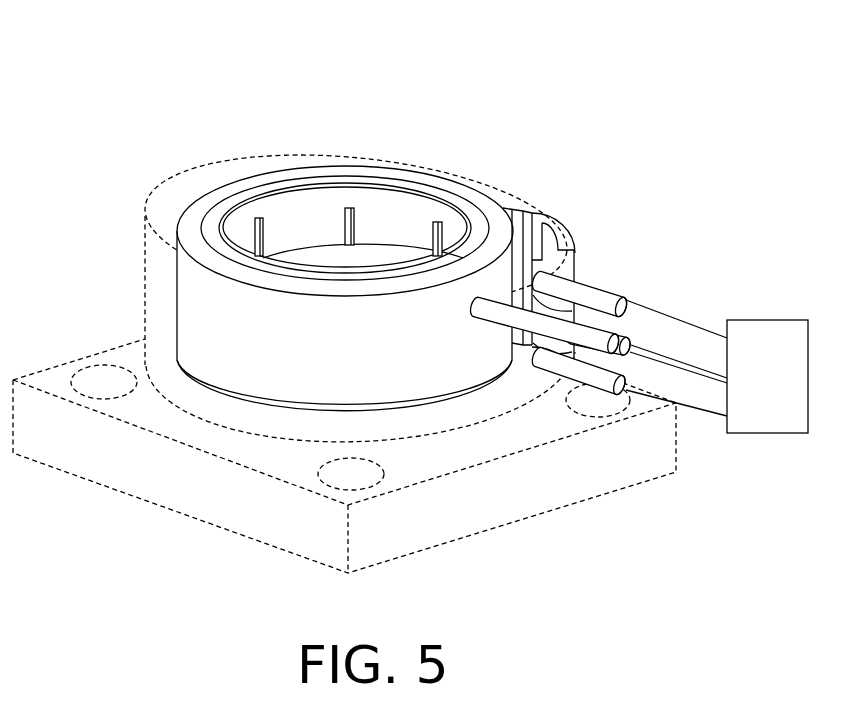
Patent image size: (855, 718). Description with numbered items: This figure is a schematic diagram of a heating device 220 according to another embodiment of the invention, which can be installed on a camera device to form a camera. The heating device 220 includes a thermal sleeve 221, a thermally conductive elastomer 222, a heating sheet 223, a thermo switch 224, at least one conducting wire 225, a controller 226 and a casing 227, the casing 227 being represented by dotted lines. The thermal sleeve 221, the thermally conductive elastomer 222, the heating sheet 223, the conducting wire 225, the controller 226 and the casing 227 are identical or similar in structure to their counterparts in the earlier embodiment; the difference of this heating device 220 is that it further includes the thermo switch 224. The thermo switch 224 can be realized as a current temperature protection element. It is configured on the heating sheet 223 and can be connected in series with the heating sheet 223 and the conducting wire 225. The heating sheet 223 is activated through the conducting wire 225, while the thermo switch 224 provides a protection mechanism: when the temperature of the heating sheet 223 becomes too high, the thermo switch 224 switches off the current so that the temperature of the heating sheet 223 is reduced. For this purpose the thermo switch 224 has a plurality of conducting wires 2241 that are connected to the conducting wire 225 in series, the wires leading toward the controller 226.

The heating device 220 is at (231, 97).
The thermal sleeve 221 is at (430, 183).
The thermally conductive elastomer 222 is at (337, 182).
The heating sheet 223 is at (188, 318).
The thermo switch 224 is at (518, 206).
The conducting wires 2241 is at (592, 296).
The conducting wire 225 is at (682, 327).
The controller 226 is at (746, 389).
The casing 227 is at (512, 523).